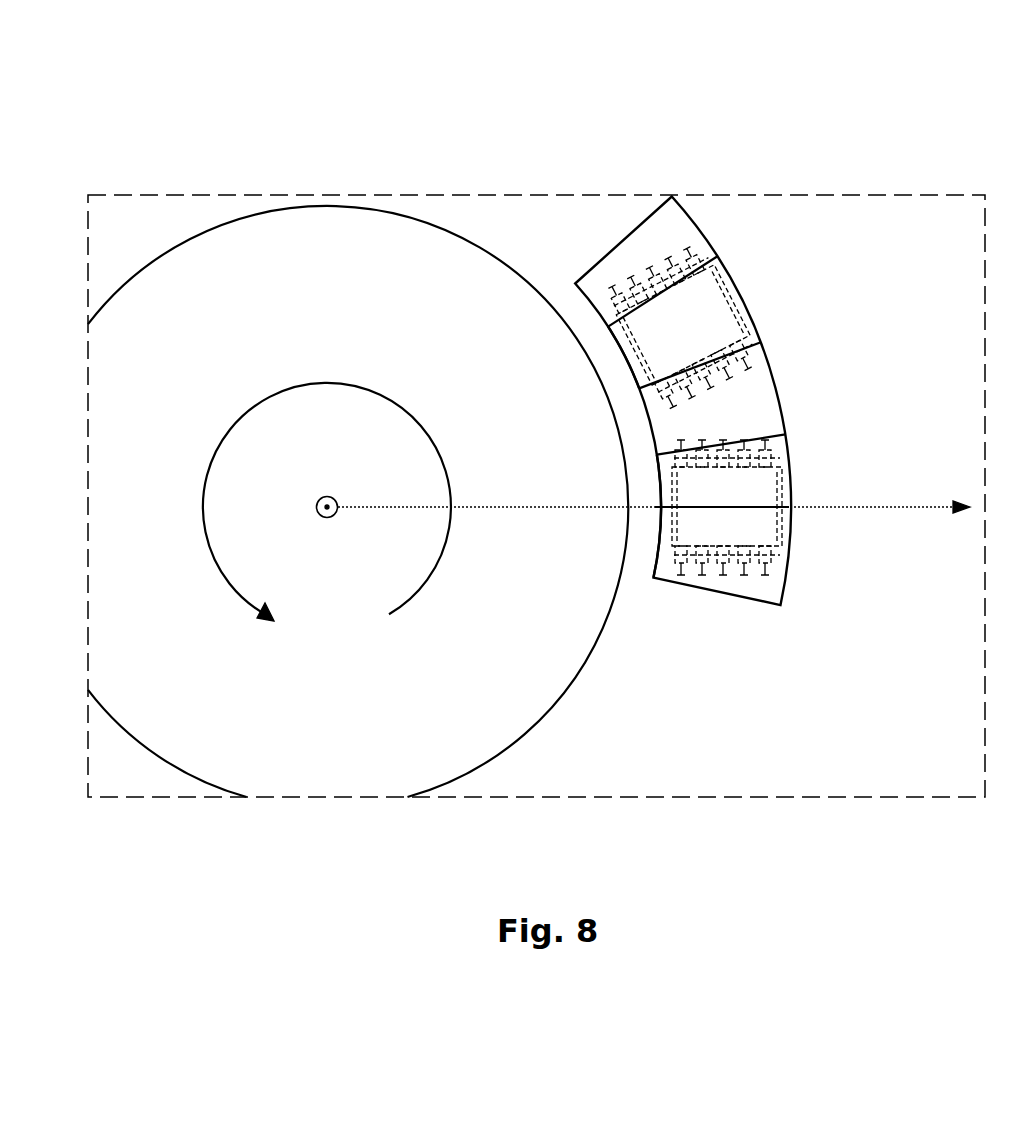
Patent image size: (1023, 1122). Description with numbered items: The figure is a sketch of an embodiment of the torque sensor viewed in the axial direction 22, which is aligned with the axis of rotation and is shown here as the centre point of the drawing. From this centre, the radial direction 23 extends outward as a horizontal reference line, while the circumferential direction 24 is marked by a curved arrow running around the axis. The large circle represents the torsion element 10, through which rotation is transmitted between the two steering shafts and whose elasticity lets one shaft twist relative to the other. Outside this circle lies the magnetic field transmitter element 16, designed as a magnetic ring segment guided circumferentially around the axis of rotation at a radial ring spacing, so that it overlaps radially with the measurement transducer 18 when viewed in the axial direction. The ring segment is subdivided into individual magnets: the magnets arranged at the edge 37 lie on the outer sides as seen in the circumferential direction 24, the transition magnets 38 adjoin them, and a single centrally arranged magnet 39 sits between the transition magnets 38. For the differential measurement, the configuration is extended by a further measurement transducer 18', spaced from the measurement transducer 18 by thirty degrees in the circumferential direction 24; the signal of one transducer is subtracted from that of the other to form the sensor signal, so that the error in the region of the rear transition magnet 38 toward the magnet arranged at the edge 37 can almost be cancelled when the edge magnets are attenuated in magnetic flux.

The torsion element 10 is at (324, 230).
The magnetic field transmitter element 16 is at (687, 171).
The measurement transducer 18 is at (793, 507).
The further measurement transducer 18' is at (762, 326).
The axial direction 22 is at (331, 495).
The radial direction 23 is at (962, 520).
The circumferential direction 24 is at (212, 557).
The magnet arranged at the edge 37 is at (712, 241).
The transition magnet 38 is at (737, 317).
The centrally arranged magnet 39 is at (782, 395).